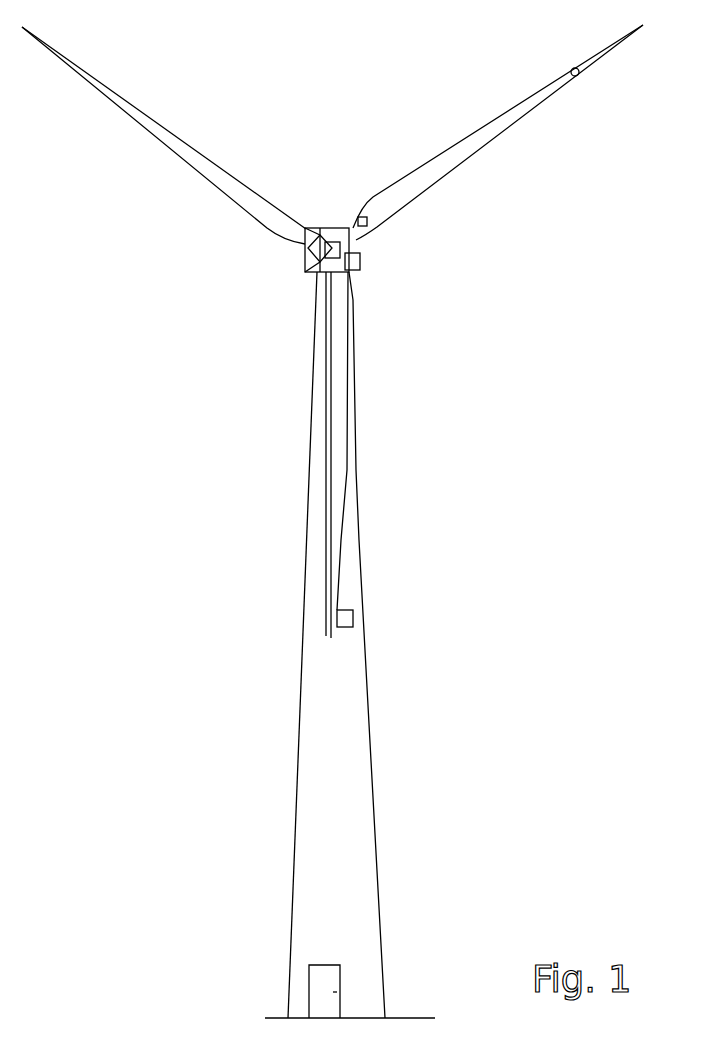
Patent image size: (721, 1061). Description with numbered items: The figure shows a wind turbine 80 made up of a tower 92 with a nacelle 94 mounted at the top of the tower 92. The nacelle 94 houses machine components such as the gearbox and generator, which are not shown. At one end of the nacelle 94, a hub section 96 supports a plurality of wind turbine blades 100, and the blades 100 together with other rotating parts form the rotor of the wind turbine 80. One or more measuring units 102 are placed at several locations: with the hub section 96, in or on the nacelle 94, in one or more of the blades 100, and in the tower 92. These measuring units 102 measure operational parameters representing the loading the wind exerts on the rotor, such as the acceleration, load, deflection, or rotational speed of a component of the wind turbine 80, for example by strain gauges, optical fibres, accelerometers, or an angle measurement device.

The wind turbine 80 is at (272, 822).
The tower 92 is at (358, 742).
The nacelle 94 is at (363, 277).
The hub section 96 is at (303, 272).
The wind turbine blades 100 is at (340, 563).
The measuring units 102 is at (579, 72).